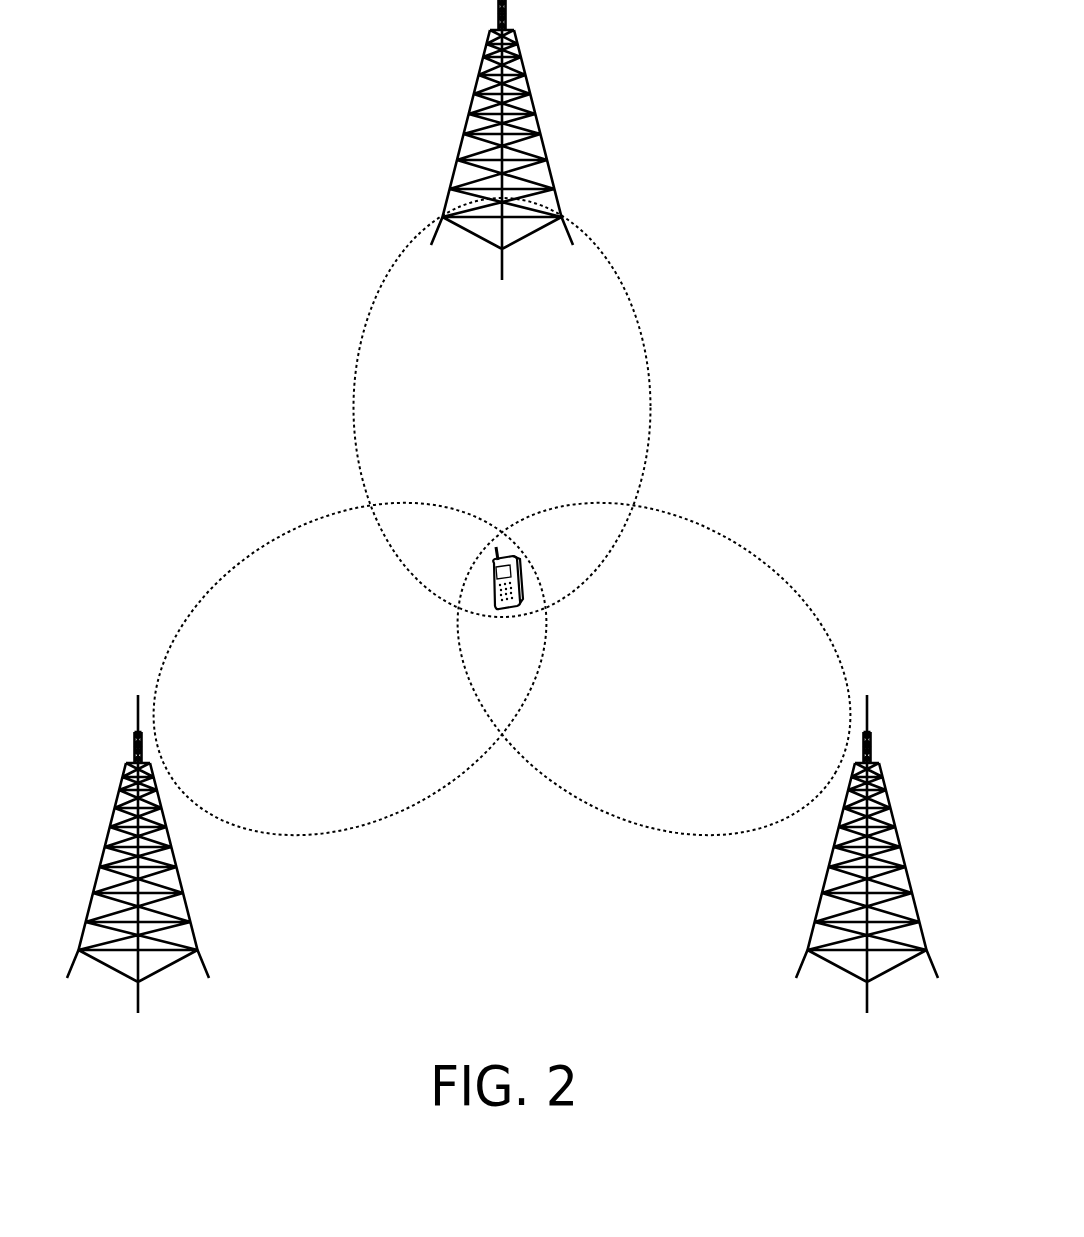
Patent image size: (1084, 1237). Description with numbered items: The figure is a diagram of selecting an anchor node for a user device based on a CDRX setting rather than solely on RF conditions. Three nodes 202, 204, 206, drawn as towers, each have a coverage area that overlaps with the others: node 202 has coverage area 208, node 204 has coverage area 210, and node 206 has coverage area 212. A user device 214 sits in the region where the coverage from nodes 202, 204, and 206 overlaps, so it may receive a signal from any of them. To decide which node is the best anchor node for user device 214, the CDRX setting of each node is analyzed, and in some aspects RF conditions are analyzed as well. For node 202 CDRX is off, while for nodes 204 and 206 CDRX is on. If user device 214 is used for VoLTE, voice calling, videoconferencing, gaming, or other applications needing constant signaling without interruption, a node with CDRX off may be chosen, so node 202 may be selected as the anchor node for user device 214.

The node 202 is at (528, 100).
The node 204 is at (892, 833).
The node 206 is at (112, 835).
The coverage area 208 is at (652, 378).
The coverage area 210 is at (828, 642).
The coverage area 212 is at (172, 652).
The user device 214 is at (519, 582).